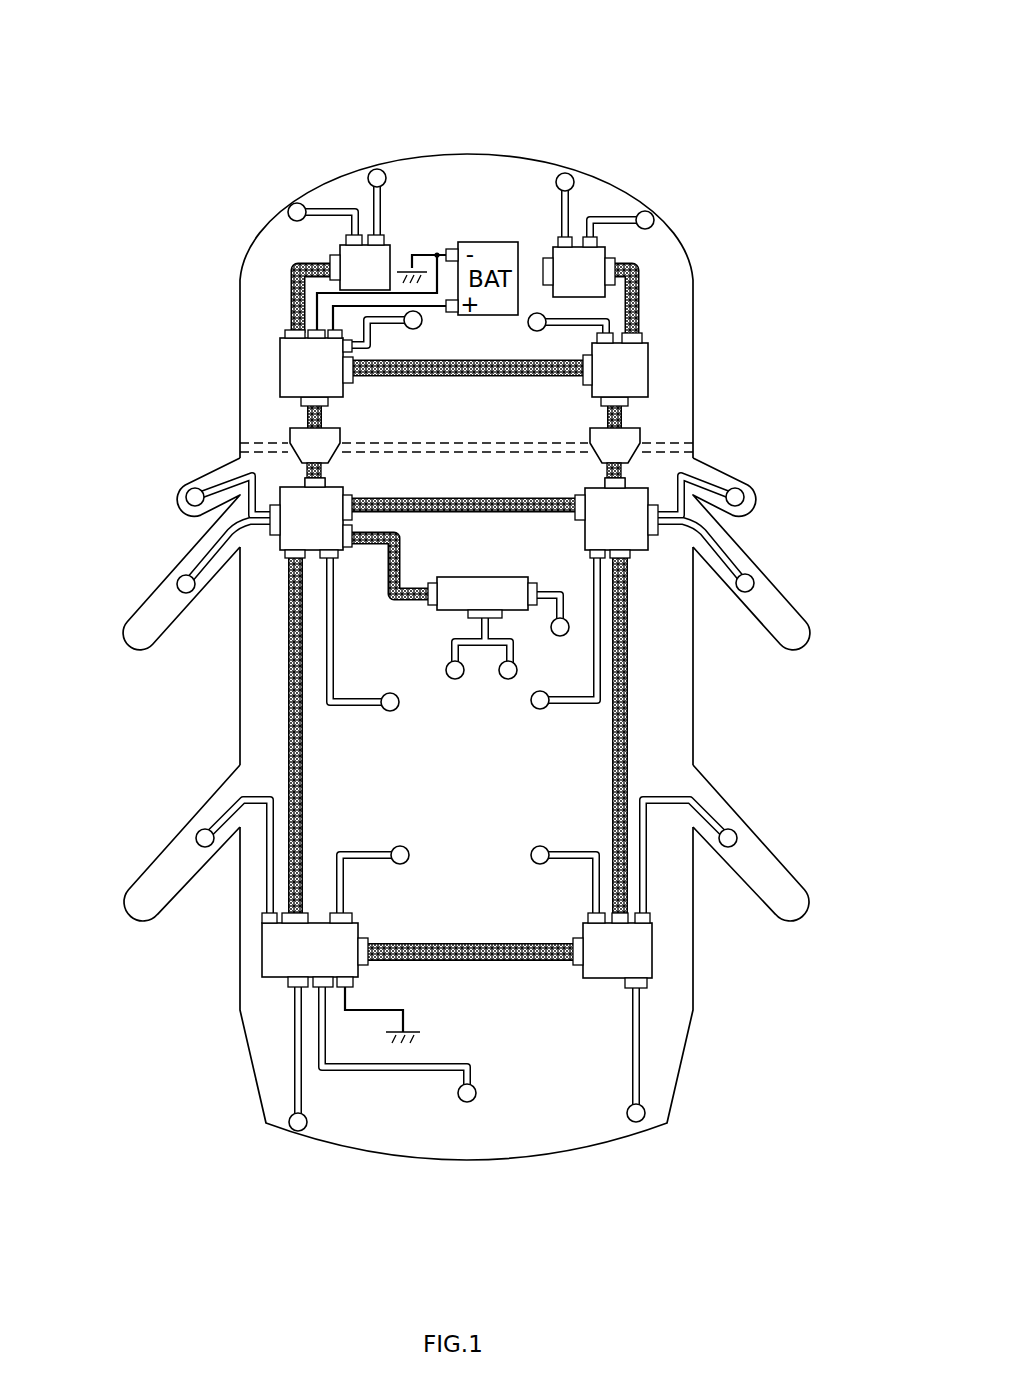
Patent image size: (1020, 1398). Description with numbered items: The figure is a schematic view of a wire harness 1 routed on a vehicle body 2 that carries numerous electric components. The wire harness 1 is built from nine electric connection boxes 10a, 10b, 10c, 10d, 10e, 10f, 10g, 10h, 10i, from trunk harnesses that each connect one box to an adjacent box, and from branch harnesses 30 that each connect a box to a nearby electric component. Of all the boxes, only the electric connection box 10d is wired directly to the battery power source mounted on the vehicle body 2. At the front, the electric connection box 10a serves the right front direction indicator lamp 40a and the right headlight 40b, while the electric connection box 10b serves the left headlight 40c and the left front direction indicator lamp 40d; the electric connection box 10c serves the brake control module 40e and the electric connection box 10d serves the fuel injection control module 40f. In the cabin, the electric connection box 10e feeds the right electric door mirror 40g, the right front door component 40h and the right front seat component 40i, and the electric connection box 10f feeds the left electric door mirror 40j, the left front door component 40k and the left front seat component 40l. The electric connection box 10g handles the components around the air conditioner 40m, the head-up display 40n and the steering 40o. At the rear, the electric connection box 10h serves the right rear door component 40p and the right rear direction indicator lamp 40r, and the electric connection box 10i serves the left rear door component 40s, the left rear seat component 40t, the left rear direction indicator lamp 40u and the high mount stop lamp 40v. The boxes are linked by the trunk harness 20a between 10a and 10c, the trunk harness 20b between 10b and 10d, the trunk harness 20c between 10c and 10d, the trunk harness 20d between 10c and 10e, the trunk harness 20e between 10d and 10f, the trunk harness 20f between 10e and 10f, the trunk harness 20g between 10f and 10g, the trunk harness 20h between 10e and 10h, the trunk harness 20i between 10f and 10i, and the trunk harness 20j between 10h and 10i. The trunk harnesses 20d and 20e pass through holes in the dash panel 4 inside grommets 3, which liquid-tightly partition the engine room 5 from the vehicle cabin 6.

The wire harness 1 is at (466, 582).
The vehicle body 2 is at (473, 157).
The grommet 3 is at (290, 432).
The dash panel 4 is at (262, 441).
The engine room 5 is at (682, 386).
The vehicle cabin 6 is at (682, 732).
The electric connection box 10a is at (606, 252).
The electric connection box 10b is at (340, 252).
The electric connection box 10c is at (648, 358).
The electric connection box 10d is at (280, 350).
The electric connection box 10e is at (648, 490).
The electric connection box 10f is at (280, 494).
The electric connection box 10g is at (478, 576).
The electric connection box 10h is at (652, 950).
The electric connection box 10i is at (262, 950).
The trunk harness 20a is at (640, 292).
The trunk harness 20b is at (292, 276).
The trunk harness 20c is at (445, 378).
The trunk harness 20d is at (606, 413).
The trunk harness 20e is at (323, 413).
The trunk harness 20f is at (455, 500).
The trunk harness 20g is at (397, 604).
The trunk harness 20h is at (630, 670).
The trunk harness 20i is at (287, 682).
The trunk harness 20j is at (483, 963).
The branch harness 30 is at (346, 208).
The direction indicator lamp 40a is at (565, 172).
The right headlight 40b is at (648, 212).
The left headlight 40c is at (378, 168).
The direction indicator lamp 40d is at (288, 210).
The brake control module 40e is at (573, 311).
The fuel injection control module 40f is at (422, 322).
The right electric door mirror 40g is at (744, 494).
The electric component of right front door 40h is at (755, 584).
The electric component around right front electric seat 40i is at (540, 710).
The left electric door mirror 40j is at (186, 498).
The electric component of left front door 40k is at (177, 584).
The electric component around left front electric seat 40l is at (390, 712).
The electric component around air conditioner 40m is at (453, 680).
The electric component around head-up display 40n is at (507, 680).
The electric component around steering 40o is at (560, 637).
The electric component around right rear door 40p is at (738, 838).
The direction indicator lamp 40r is at (646, 1113).
The electric component of left rear door 40s is at (195, 838).
The electric component around left rear electric seat 40t is at (402, 865).
The direction indicator lamp 40u is at (300, 1132).
The high mount stop lamp 40v is at (467, 1103).